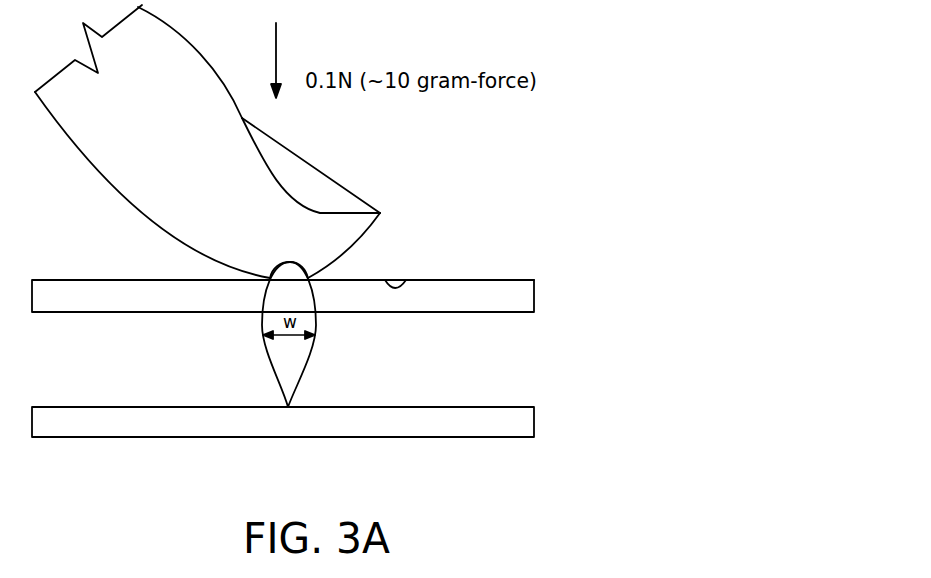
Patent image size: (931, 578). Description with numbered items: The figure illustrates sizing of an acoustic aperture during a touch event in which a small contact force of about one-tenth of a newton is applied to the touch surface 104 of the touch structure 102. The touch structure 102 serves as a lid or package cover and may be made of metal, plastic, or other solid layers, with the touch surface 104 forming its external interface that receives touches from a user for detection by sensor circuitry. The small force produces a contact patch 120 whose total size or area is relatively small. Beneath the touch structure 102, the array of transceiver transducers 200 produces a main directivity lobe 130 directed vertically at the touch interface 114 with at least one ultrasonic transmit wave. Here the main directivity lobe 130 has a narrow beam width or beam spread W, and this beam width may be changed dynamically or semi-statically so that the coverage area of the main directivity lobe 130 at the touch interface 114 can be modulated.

The touch structure 102 is at (535, 295).
The touch surface 104 is at (512, 280).
The touch interface 114 is at (403, 280).
The contact patch 120 is at (287, 282).
The main directivity lobe 130 is at (313, 350).
The array of transceiver transducers 200 is at (535, 422).